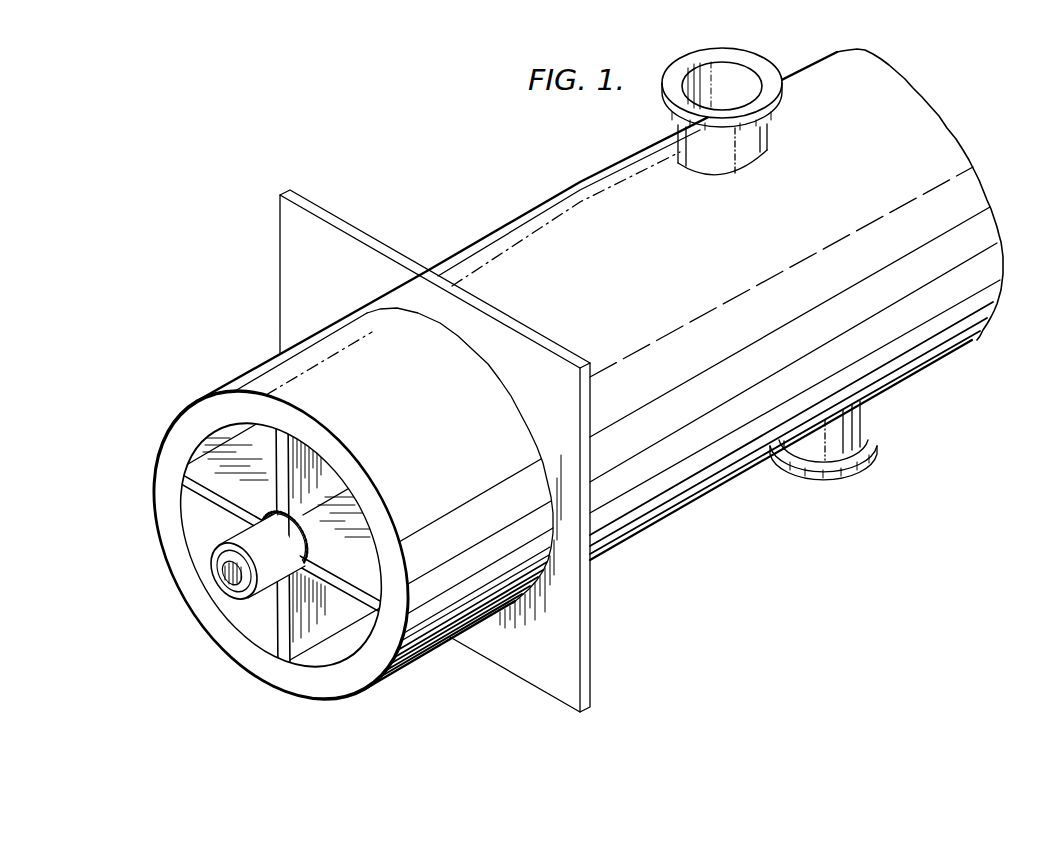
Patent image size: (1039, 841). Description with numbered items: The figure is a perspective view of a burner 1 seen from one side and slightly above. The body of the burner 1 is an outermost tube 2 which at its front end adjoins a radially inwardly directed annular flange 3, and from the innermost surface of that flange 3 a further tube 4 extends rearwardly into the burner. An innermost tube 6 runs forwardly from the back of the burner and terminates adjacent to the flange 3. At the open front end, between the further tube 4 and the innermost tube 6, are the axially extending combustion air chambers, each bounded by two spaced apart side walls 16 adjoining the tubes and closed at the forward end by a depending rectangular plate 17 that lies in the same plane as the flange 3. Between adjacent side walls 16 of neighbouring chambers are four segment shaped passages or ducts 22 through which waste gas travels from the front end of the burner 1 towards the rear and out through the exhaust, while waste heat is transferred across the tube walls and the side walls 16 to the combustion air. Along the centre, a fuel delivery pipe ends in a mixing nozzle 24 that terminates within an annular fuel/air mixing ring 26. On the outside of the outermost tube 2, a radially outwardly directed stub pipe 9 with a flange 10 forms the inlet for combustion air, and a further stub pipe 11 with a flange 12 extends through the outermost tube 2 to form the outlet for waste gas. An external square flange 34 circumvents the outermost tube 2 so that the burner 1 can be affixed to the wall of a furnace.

The burner 1 is at (480, 220).
The outermost tube 2 is at (984, 241).
The radially inwardly directed annular flange 3 is at (162, 477).
The further tube 4 is at (220, 440).
The innermost tube 6 is at (343, 503).
The stub pipe 9 is at (858, 430).
The flange 10 is at (854, 466).
The stub pipe 11 is at (761, 138).
The flange 12 is at (684, 64).
The side walls 16 is at (323, 467).
The depending rectangular plate 17 is at (283, 450).
The segment shaped passages or ducts 22 is at (250, 428).
The mixing nozzle 24 is at (220, 567).
The annular fuel/air mixing ring 26 is at (266, 528).
The external square flange 34 is at (569, 353).